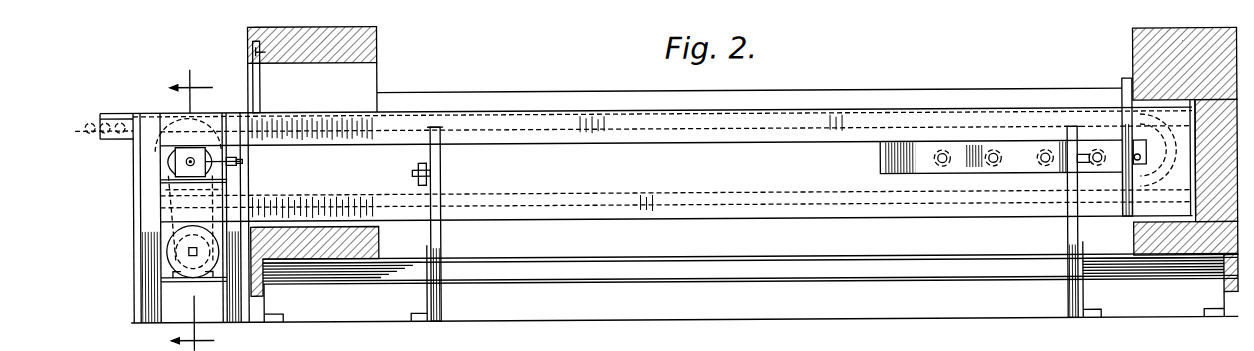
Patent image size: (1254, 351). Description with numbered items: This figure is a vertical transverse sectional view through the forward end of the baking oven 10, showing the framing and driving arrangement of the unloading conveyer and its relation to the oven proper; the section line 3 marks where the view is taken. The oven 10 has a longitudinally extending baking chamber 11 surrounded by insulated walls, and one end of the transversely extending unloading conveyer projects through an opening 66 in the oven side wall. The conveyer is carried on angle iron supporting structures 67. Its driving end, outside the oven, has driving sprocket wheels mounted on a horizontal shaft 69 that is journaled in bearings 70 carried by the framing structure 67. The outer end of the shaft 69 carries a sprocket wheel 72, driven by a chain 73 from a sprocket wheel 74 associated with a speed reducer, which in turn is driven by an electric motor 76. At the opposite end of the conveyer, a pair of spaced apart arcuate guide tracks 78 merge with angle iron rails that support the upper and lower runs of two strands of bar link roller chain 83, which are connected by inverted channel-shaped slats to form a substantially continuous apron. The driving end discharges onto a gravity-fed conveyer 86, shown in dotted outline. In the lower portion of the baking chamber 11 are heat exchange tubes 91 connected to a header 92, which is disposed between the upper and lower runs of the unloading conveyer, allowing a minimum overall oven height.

The section line 3- 3 is at (192, 201).
The baking oven 10 is at (1132, 66).
The baking chamber 11 is at (490, 62).
The opening 66 is at (283, 90).
The angle iron supporting structures 67 is at (498, 208).
The horizontal shaft 69 is at (186, 164).
The bearings 70 is at (684, 333).
The sprocket wheel 72 is at (196, 138).
The chain 73 is at (160, 212).
The sprocket wheel 74 is at (170, 267).
The electric motor 76 is at (168, 256).
The arcuate guide tracks 78 is at (1156, 180).
The bar link roller chain 83 is at (680, 122).
The gravity-fed conveyer 86 is at (101, 140).
The tubes 91 is at (1019, 161).
The header 92 is at (884, 165).